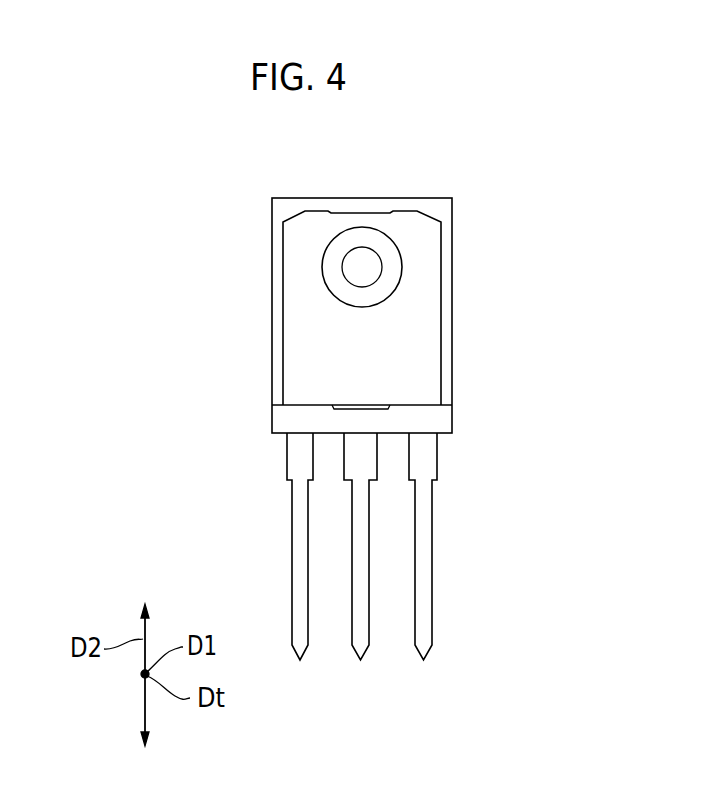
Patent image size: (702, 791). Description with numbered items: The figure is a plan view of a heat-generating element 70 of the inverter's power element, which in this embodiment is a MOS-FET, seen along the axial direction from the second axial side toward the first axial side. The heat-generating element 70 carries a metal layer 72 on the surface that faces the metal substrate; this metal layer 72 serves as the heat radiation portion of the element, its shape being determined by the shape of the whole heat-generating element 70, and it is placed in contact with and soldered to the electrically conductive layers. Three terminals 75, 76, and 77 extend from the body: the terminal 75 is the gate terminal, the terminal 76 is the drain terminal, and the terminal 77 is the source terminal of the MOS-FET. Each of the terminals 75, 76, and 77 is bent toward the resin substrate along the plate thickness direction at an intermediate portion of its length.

The heat-generating element 70 is at (402, 198).
The metal layer 72 is at (414, 352).
The terminal 75 is at (308, 620).
The terminal 76 is at (369, 620).
The terminal 77 is at (432, 620).